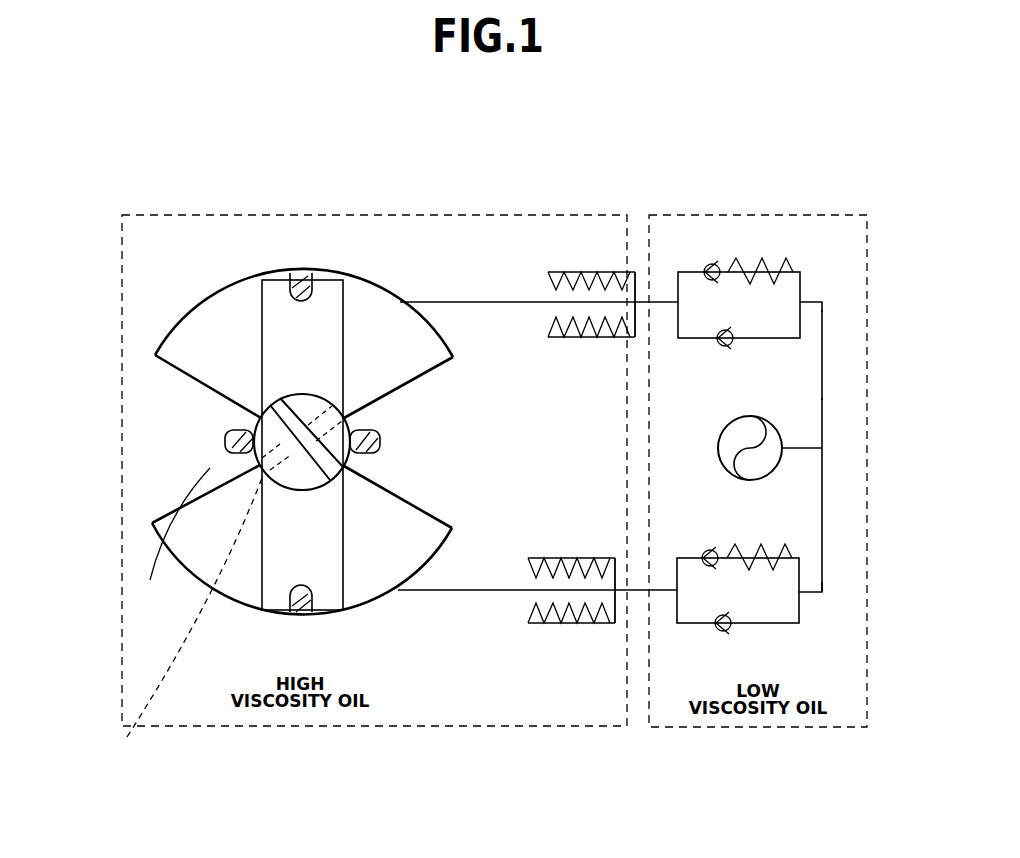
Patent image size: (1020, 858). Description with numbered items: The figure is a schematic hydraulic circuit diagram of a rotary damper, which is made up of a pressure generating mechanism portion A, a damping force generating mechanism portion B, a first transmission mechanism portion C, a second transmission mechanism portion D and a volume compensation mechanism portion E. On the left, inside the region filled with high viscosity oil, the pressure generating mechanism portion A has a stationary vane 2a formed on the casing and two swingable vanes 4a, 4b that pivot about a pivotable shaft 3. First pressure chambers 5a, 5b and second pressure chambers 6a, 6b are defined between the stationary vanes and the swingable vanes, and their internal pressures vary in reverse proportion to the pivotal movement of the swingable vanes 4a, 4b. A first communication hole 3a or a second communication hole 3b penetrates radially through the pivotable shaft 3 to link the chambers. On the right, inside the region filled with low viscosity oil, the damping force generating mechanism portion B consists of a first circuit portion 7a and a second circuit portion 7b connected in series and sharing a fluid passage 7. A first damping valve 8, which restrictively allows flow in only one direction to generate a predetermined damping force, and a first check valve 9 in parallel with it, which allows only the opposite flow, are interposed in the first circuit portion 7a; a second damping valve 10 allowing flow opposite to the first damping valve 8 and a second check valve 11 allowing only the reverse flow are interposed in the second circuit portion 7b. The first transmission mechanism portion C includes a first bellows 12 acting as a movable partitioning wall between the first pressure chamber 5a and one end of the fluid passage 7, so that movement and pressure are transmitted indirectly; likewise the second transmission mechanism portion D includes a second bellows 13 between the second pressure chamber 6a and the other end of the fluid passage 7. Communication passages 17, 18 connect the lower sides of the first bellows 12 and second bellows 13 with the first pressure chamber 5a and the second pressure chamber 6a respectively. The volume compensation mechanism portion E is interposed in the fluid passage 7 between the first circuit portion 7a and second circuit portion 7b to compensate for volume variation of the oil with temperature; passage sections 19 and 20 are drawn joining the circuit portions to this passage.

The stationary vane 2a is at (180, 560).
The pivotable shaft 3 is at (300, 405).
The first communication hole 3a is at (176, 618).
The second communication hole 3b is at (262, 410).
The swingable vane 4a is at (280, 300).
The swingable vane 4b is at (270, 593).
The first pressure chamber 5a is at (386, 300).
The first pressure chamber 5b is at (192, 537).
The second pressure chamber 6a is at (375, 590).
The second pressure chamber 6b is at (240, 310).
The fluid passage 7 is at (825, 409).
The first circuit portion 7a is at (819, 294).
The second circuit portion 7b is at (805, 613).
The first damping valve 8 is at (772, 263).
The first check valve 9 is at (723, 346).
The second damping valve 10 is at (762, 560).
The second check valve 11 is at (726, 632).
The first bellows 12 is at (628, 288).
The second bellows 13 is at (620, 600).
The communication passage 17 is at (470, 300).
The communication passage 18 is at (483, 590).
The upper passage portion 19 is at (822, 362).
The lower passage portion 20 is at (822, 568).
The pressure generating mechanism portion A is at (337, 268).
The damping force generating mechanism portion B is at (690, 268).
The first transmission mechanism portion C is at (580, 265).
The second transmission mechanism portion D is at (585, 626).
The volume compensation mechanism portion E is at (787, 439).